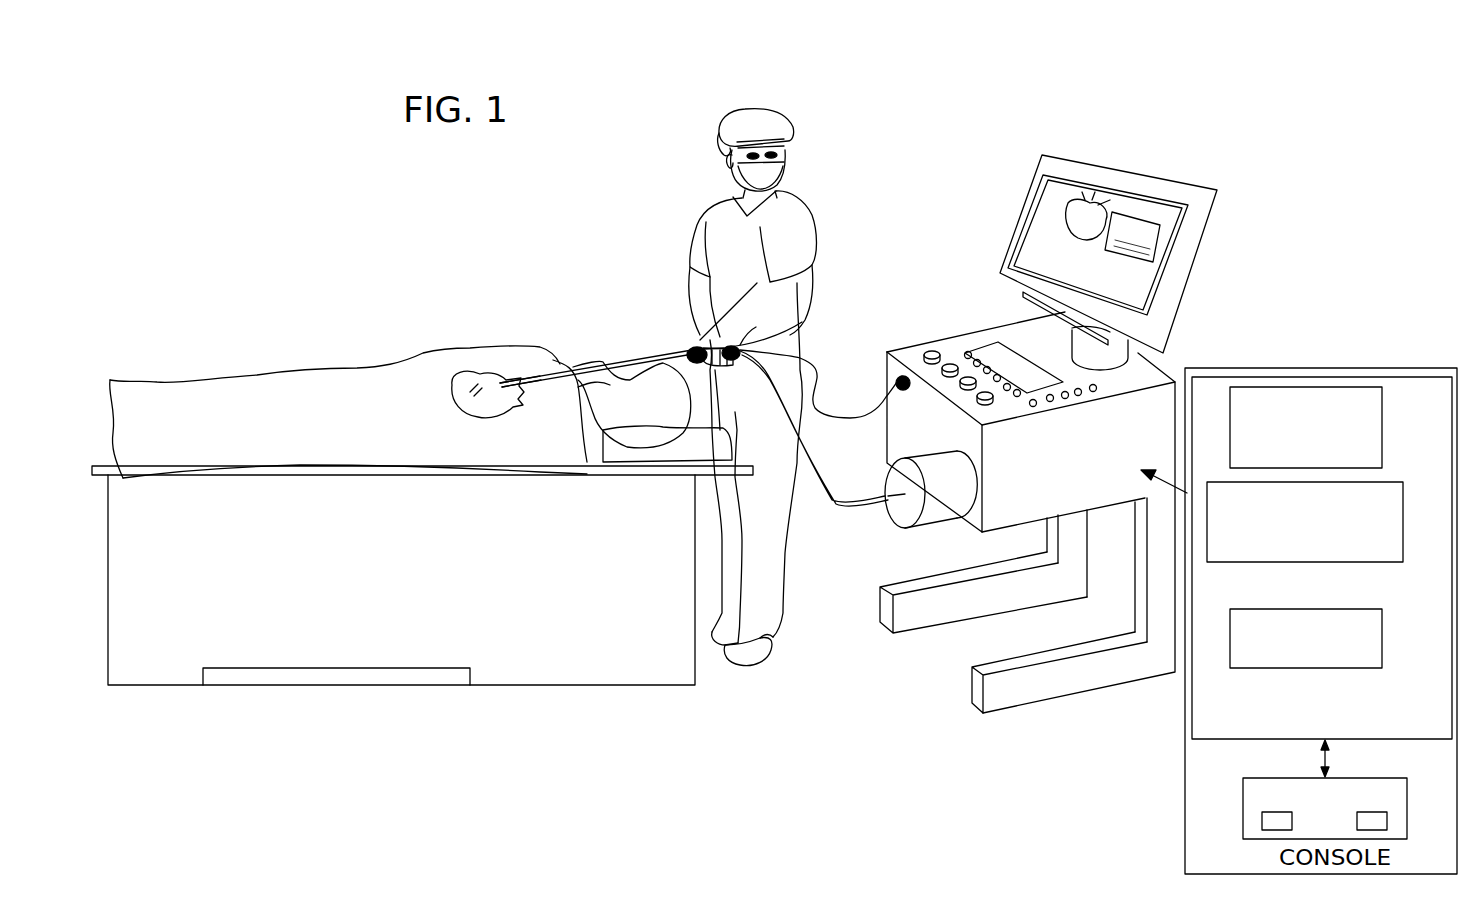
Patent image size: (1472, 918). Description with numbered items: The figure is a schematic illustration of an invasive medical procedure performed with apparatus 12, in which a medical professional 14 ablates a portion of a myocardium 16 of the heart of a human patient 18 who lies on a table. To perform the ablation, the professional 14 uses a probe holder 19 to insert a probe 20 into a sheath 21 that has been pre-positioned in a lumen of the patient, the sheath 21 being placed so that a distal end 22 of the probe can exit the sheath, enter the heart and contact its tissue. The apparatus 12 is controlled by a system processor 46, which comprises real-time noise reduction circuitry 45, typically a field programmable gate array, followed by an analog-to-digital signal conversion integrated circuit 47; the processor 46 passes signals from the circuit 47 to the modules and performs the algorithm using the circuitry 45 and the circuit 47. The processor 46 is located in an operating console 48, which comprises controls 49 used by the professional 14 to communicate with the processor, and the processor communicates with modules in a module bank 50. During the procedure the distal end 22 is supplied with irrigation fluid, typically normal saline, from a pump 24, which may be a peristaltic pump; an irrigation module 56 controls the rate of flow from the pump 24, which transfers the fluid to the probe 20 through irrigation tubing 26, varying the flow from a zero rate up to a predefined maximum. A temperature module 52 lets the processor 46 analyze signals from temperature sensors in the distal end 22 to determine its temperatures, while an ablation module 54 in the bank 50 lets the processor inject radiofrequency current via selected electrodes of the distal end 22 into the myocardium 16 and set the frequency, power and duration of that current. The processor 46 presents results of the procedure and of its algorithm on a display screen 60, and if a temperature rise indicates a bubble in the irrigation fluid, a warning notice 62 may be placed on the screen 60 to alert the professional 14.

The apparatus 12 is at (899, 150).
The medical professional 14 is at (757, 118).
The myocardium 16 is at (478, 352).
The human patient 18 is at (200, 395).
The probe holder 19 is at (682, 323).
The probe 20 is at (581, 350).
The sheath 21 is at (545, 347).
The distal end 22 is at (508, 323).
The pump 24 is at (928, 527).
The irrigation tubing 26 is at (843, 510).
The real-time noise reduction circuitry 45 is at (1262, 821).
The system processor 46 is at (1390, 779).
The analog-to-digital signal conversion integrated circuit 47 is at (1387, 821).
The operating console 48 is at (967, 340).
The controls 49 is at (932, 349).
The module bank 50 is at (1195, 742).
The temperature module 52 is at (1403, 532).
The ablation module 54 is at (1382, 643).
The irrigation module 56 is at (1382, 418).
The display screen 60 is at (1219, 215).
The warning notice 62 is at (1133, 212).